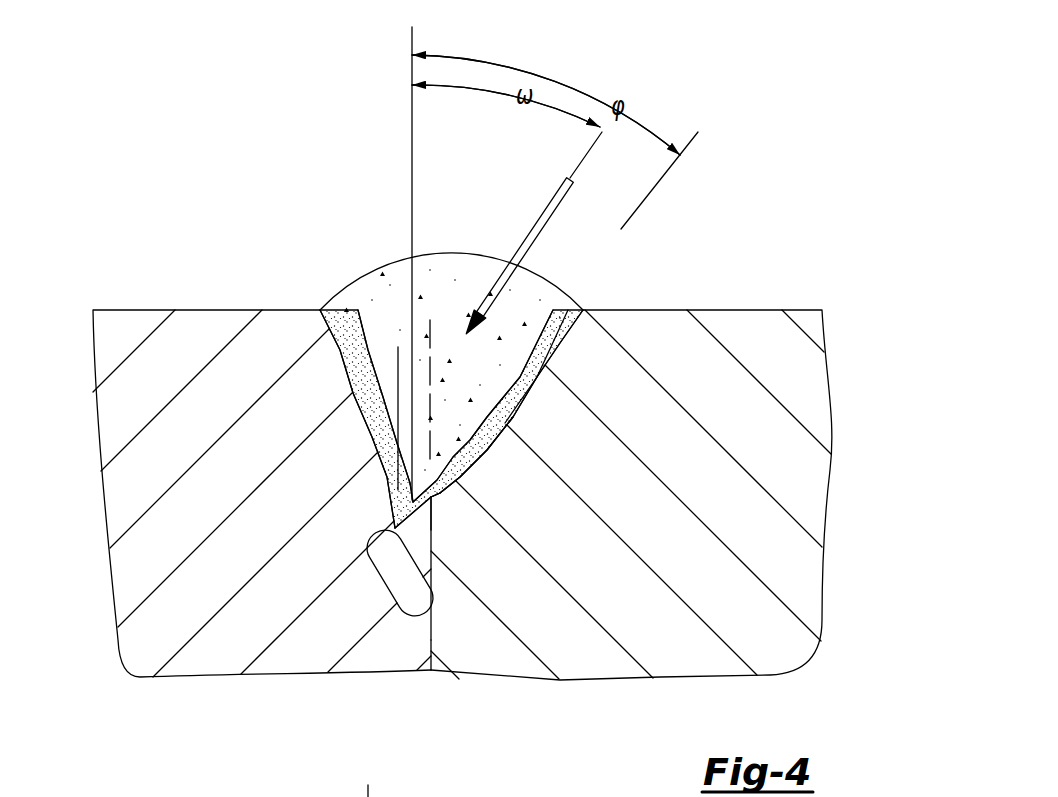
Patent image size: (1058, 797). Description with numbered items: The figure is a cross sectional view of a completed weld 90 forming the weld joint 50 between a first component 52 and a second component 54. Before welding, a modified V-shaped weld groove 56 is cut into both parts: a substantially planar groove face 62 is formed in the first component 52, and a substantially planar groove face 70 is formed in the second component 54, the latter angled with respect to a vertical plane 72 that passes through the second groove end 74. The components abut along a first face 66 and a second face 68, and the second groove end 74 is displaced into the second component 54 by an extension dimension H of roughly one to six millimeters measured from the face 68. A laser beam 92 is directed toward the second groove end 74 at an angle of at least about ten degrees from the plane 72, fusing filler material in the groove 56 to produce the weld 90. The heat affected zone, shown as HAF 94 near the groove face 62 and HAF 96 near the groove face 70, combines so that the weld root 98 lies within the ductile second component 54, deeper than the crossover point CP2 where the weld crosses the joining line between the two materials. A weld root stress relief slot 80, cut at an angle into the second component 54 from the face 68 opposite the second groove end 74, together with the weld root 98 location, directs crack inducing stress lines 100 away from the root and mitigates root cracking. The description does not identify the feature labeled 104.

The weld joint 50 is at (370, 272).
The first component 52 is at (772, 552).
The second component 54 is at (186, 538).
The modified V-shaped weld groove 56 is at (503, 348).
The groove face 62 is at (535, 330).
The first face 66 is at (430, 652).
The second face 68 is at (433, 624).
The groove face 70 is at (360, 370).
The plane 72 is at (412, 138).
The second groove end 74 is at (407, 490).
The weld root stress relief slot 80 is at (377, 580).
The completed weld 90 is at (527, 268).
The laser beam 92 is at (545, 222).
The HAF 94 is at (520, 392).
The HAF 96 is at (347, 400).
The weld root 98 is at (396, 527).
The crack inducing stress lines 100 is at (438, 477).
The weld direction indicator 104 is at (373, 776).
The extension dimension H is at (468, 352).
The crossover point CP2 is at (433, 497).